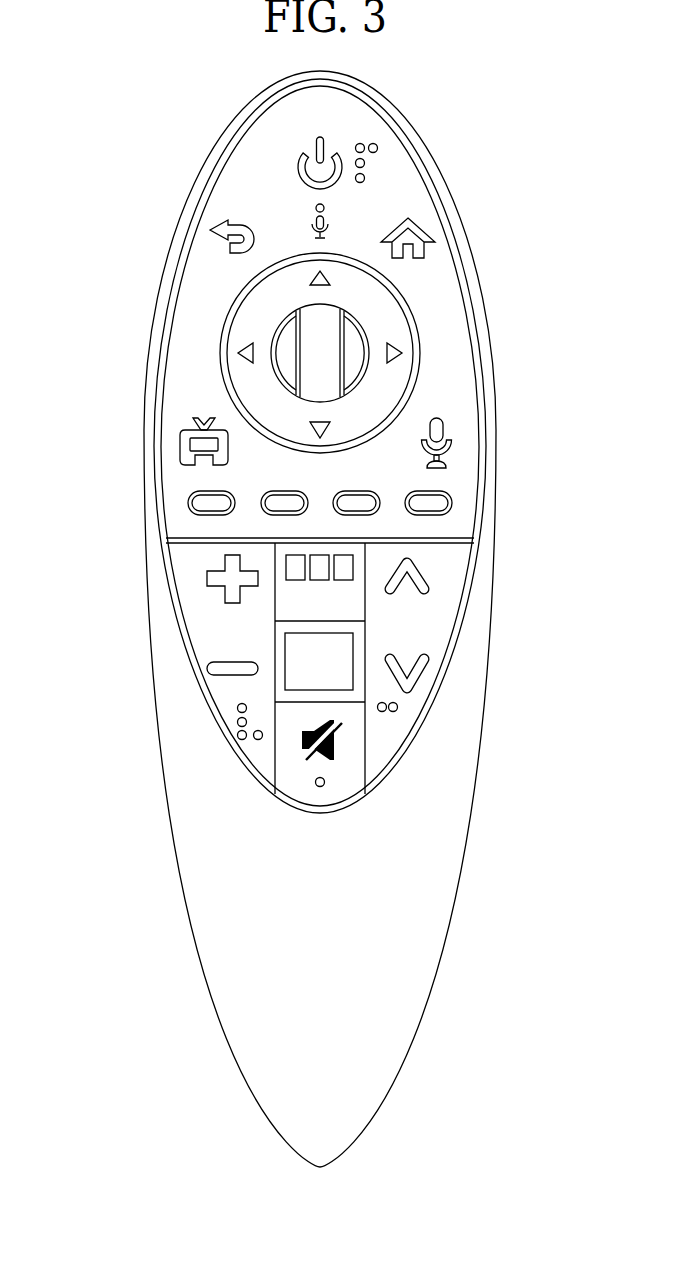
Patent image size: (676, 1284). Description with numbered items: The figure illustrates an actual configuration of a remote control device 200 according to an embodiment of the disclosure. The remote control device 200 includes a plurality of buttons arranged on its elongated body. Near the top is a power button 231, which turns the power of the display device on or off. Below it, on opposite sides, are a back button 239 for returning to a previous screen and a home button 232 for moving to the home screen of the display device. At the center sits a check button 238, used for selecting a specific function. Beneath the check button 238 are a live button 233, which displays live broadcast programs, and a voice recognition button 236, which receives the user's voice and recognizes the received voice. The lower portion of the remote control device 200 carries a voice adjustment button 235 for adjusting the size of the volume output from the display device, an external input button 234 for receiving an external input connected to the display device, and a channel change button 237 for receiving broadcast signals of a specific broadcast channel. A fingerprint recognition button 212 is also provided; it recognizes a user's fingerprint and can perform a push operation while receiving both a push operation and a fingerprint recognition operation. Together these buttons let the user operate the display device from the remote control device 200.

The remote control device 200 is at (88, 113).
The fingerprint recognition button 212 is at (333, 690).
The power button 231 is at (337, 153).
The home button 232 is at (420, 232).
The live button 233 is at (188, 445).
The external input button 234 is at (328, 553).
The voice adjustment button 235 is at (183, 642).
The voice recognition button 236 is at (447, 433).
The channel change button 237 is at (445, 613).
The check button 238 is at (283, 336).
The back button 239 is at (208, 238).